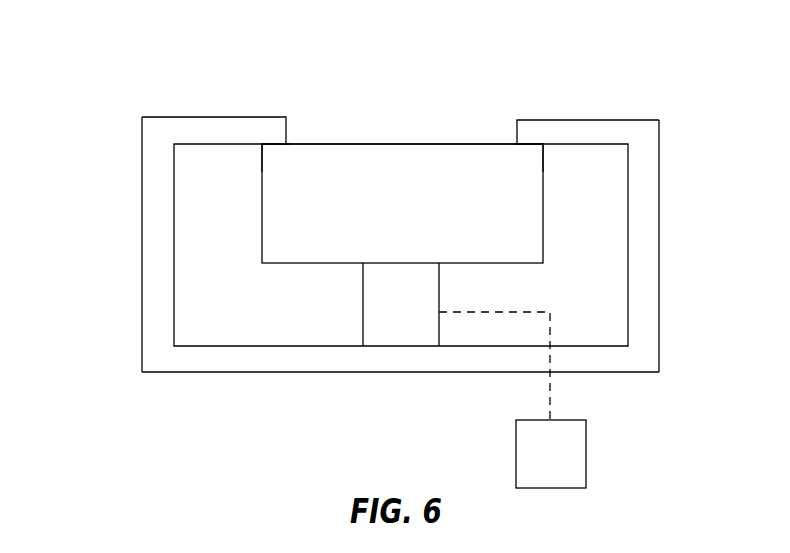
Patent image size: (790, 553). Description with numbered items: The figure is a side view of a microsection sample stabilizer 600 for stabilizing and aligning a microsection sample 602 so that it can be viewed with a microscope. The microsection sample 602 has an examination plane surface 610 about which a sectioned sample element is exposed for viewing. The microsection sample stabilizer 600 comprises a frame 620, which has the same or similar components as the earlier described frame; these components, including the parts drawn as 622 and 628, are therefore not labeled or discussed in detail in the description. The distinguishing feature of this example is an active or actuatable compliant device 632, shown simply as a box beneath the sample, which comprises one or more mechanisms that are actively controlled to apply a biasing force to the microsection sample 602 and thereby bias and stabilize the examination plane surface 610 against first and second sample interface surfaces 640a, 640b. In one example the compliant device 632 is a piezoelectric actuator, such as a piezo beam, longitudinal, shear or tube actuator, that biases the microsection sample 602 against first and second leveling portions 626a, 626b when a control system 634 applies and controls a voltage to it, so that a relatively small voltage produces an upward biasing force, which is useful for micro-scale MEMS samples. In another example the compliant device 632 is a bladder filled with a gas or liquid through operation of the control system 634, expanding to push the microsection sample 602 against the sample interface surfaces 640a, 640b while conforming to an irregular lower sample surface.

The microsection sample stabilizer 600 is at (125, 78).
The microsection sample 602 is at (242, 252).
The examination plane surface 610 is at (360, 135).
The frame 620 is at (128, 207).
The housing base 622 is at (213, 357).
The first leveling portion 626a is at (230, 133).
The second leveling portion 626b is at (583, 135).
The opening 628 is at (434, 127).
The compliant device 632 is at (372, 322).
The control system 634 is at (570, 445).
The first sample interface surface 640a is at (272, 158).
The second sample interface surface 640b is at (529, 158).